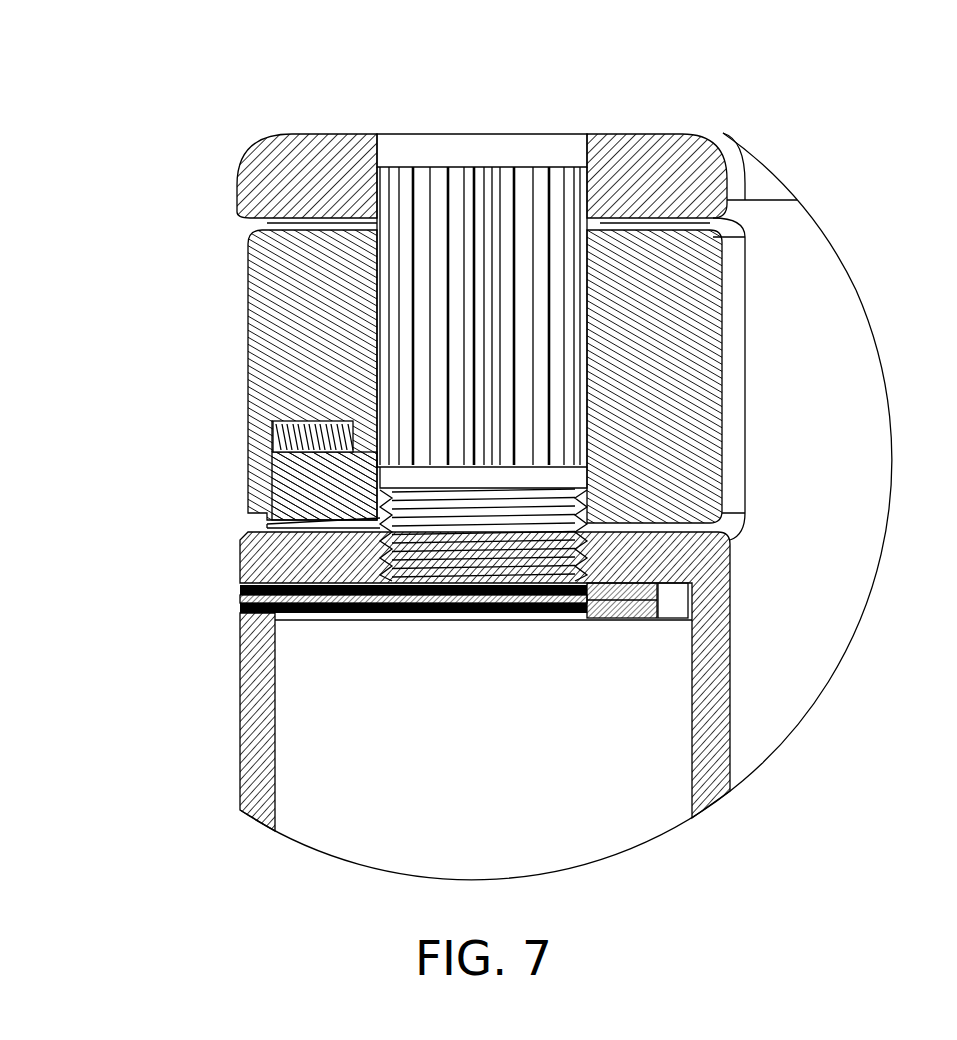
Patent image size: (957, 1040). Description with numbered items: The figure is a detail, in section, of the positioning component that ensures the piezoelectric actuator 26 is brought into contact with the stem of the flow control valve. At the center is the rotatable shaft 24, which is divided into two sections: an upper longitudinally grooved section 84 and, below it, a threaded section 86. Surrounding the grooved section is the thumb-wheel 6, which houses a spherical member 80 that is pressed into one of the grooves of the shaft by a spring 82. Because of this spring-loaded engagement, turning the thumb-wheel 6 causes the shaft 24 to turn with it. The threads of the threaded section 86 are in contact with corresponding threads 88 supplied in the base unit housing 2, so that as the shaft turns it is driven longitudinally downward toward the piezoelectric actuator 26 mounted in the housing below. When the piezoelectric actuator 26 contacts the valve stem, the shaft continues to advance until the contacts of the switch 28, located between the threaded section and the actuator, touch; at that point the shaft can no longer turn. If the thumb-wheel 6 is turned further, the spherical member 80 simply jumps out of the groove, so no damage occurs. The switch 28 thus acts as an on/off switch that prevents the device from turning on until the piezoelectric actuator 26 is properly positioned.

The base unit housing 2 is at (180, 683).
The rotatable shaft 24 is at (397, 136).
The longitudinally grooved section 84 is at (448, 198).
The thumb-wheel 6 is at (278, 273).
The spherical member 80 is at (267, 405).
The spring 82 is at (248, 455).
The threaded section 86 is at (250, 532).
The corresponding threads 88 is at (380, 560).
The switch 28 is at (238, 605).
The piezoelectric actuator 26 is at (373, 745).